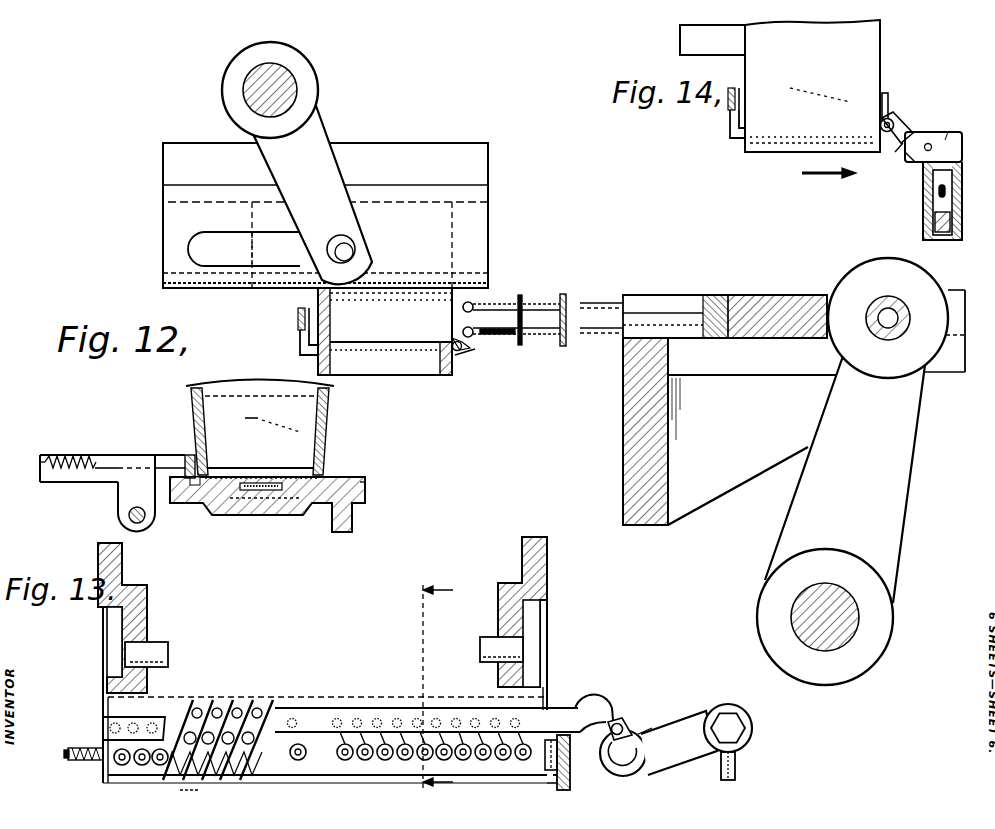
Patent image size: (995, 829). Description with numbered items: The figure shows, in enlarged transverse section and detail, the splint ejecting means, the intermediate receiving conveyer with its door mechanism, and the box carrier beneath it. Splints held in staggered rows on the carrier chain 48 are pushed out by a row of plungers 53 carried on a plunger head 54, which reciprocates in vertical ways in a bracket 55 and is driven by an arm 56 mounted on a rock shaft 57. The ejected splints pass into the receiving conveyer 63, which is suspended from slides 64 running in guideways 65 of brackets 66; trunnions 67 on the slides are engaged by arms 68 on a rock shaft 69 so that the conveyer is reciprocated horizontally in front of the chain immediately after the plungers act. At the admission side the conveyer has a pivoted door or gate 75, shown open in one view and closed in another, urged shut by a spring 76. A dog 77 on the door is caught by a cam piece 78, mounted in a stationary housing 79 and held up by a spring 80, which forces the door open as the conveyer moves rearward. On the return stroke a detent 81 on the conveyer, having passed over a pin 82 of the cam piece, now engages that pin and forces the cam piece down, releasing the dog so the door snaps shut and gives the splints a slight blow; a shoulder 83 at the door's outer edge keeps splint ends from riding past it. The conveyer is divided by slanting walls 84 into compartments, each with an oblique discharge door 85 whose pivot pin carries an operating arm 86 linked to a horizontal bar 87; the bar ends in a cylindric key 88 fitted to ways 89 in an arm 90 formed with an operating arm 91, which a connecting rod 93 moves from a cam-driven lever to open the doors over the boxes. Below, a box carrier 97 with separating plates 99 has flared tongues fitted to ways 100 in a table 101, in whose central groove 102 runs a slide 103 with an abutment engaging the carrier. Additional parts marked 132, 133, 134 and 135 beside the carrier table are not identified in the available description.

In FIG. 12, the carrier chain 48 is at (514, 329).
In FIG. 12, the plungers 53 is at (602, 328).
In FIG. 12, the plunger head 54 is at (742, 300).
In FIG. 12, the bracket 55 is at (752, 450).
In FIG. 12, the arm 56 is at (865, 430).
In FIG. 12, the rock shaft 57 is at (792, 618).
In FIG. 12, the receiving conveyer 63 is at (422, 336).
In FIG. 14, the receiving conveyer 63 is at (812, 86).
In FIG. 12, the slides 64 is at (259, 249).
In FIG. 13, the slides 64 is at (148, 622).
In FIG. 14, the slides 64 is at (712, 40).
In FIG. 13, the guideways 65 is at (107, 612).
In FIG. 12, the brackets 66 is at (325, 215).
In FIG. 13, the brackets 66 is at (125, 560).
In FIG. 12, the trunnions 67 is at (350, 250).
In FIG. 13, the trunnions 67 is at (172, 648).
In FIG. 12, the arms 68 is at (312, 193).
In FIG. 12, the rock shaft 69 is at (298, 88).
In FIG. 12, the door or gate 75 is at (459, 352).
In FIG. 14, the door or gate 75 is at (893, 117).
In FIG. 13, the spring 76 is at (84, 746).
In FIG. 13, the dog 77 is at (571, 750).
In FIG. 14, the dog 77 is at (896, 150).
In FIG. 13, the cam piece 78 is at (571, 775).
In FIG. 14, the cam piece 78 is at (964, 148).
In FIG. 14, the housing 79 is at (925, 190).
In FIG. 14, the spring 80 is at (934, 226).
In FIG. 13, the detent 81 is at (538, 755).
In FIG. 14, the detent 81 is at (908, 134).
In FIG. 13, the pin 82 is at (556, 784).
In FIG. 14, the pin 82 is at (912, 160).
In FIG. 12, the shoulder 83 is at (468, 353).
In FIG. 14, the shoulder 83 is at (880, 102).
In FIG. 13, the slanting compartment walls 84 is at (197, 705).
In FIG. 12, the discharge door 85 is at (388, 365).
In FIG. 13, the discharge door 85 is at (200, 790).
In FIG. 12, the operating arms 86 is at (310, 331).
In FIG. 13, the operating arms 86 is at (340, 740).
In FIG. 14, the operating arms 86 is at (733, 135).
In FIG. 12, the horizontal bar 87 is at (298, 314).
In FIG. 13, the horizontal bar 87 is at (308, 722).
In FIG. 14, the horizontal bar 87 is at (728, 98).
In FIG. 13, the cylindric key 88 is at (634, 728).
In FIG. 13, the ways 89 is at (619, 722).
In FIG. 13, the arm 90 is at (642, 726).
In FIG. 13, the operating arm 91 is at (679, 743).
In FIG. 13, the connecting rod 93 is at (746, 742).
In FIG. 12, the box carrier 97 is at (332, 428).
In FIG. 12, the separating plates 99 is at (264, 432).
In FIG. 12, the ways 100 is at (336, 476).
In FIG. 12, the table 101 is at (372, 487).
In FIG. 12, the central groove 102 is at (279, 492).
In FIG. 12, the slide 103 is at (258, 496).
In FIG. 12, the lever rod 132 is at (166, 462).
In FIG. 12, the stop block 133 is at (186, 455).
In FIG. 12, the spring 134 is at (108, 460).
In FIG. 12, the hanger pivot 135 is at (120, 517).